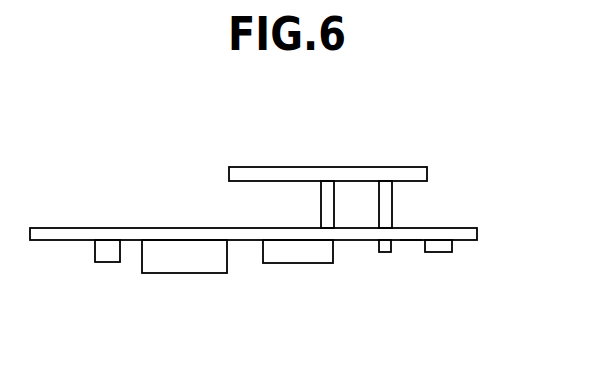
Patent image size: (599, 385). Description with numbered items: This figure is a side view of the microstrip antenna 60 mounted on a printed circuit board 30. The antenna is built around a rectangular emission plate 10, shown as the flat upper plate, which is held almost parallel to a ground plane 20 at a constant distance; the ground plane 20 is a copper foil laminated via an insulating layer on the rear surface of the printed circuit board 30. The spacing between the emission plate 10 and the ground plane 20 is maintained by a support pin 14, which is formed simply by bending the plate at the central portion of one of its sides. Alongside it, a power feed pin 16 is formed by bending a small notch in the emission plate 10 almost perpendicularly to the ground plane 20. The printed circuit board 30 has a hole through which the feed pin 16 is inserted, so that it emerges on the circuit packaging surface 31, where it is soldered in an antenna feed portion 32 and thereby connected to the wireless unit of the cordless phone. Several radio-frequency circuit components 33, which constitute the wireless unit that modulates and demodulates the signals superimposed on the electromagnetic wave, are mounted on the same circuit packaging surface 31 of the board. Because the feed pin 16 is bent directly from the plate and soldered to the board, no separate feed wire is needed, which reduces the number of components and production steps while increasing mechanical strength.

The microstrip antenna 60 is at (400, 154).
The emission plate 10 is at (428, 172).
The support pin 14 is at (321, 203).
The power feed pin 16 is at (393, 202).
The ground plane 20 is at (106, 227).
The printed circuit board 30 is at (478, 233).
The circuit packaging surface 31 is at (411, 242).
The antenna feed portion 32 is at (385, 254).
The radio-frequency circuit component 33 is at (109, 264).